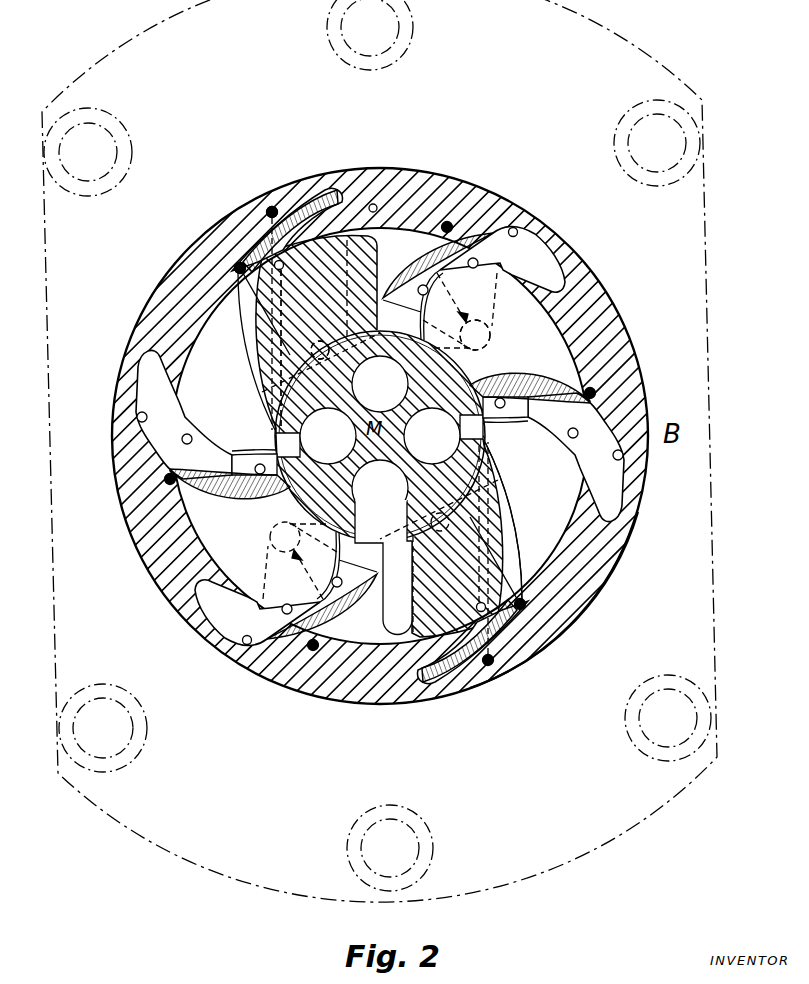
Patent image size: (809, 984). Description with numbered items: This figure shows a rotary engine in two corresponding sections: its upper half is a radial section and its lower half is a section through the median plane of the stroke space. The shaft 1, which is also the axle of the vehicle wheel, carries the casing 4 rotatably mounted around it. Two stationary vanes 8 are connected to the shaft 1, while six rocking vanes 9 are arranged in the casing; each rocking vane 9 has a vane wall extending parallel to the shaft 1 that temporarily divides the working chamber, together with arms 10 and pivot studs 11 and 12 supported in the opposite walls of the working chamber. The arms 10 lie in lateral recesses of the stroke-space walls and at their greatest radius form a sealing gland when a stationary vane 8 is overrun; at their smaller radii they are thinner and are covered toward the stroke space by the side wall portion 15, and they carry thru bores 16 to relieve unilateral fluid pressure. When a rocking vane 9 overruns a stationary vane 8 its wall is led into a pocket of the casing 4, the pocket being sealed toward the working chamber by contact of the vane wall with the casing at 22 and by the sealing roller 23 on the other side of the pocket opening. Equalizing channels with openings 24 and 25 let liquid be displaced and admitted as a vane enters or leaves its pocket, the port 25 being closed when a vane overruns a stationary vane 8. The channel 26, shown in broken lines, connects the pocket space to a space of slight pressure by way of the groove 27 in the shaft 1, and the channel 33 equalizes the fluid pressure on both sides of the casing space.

The shaft 1 is at (386, 436).
The casing 4 is at (190, 288).
The stationary vane 8 is at (353, 258).
The rocking vane 9 is at (303, 203).
The arm 10 is at (415, 304).
The pivot stud 11 is at (505, 335).
The pivot stud 12 is at (490, 342).
The side wall portion 15 is at (473, 285).
The thru bore 16 is at (500, 408).
The sealing contact point 22 is at (346, 198).
The sealing roller 23 is at (237, 263).
The equalizing channel opening 24 is at (271, 207).
The port 25 is at (572, 437).
The channel 26 is at (290, 357).
The groove 27 is at (320, 347).
The channel 33 is at (413, 163).